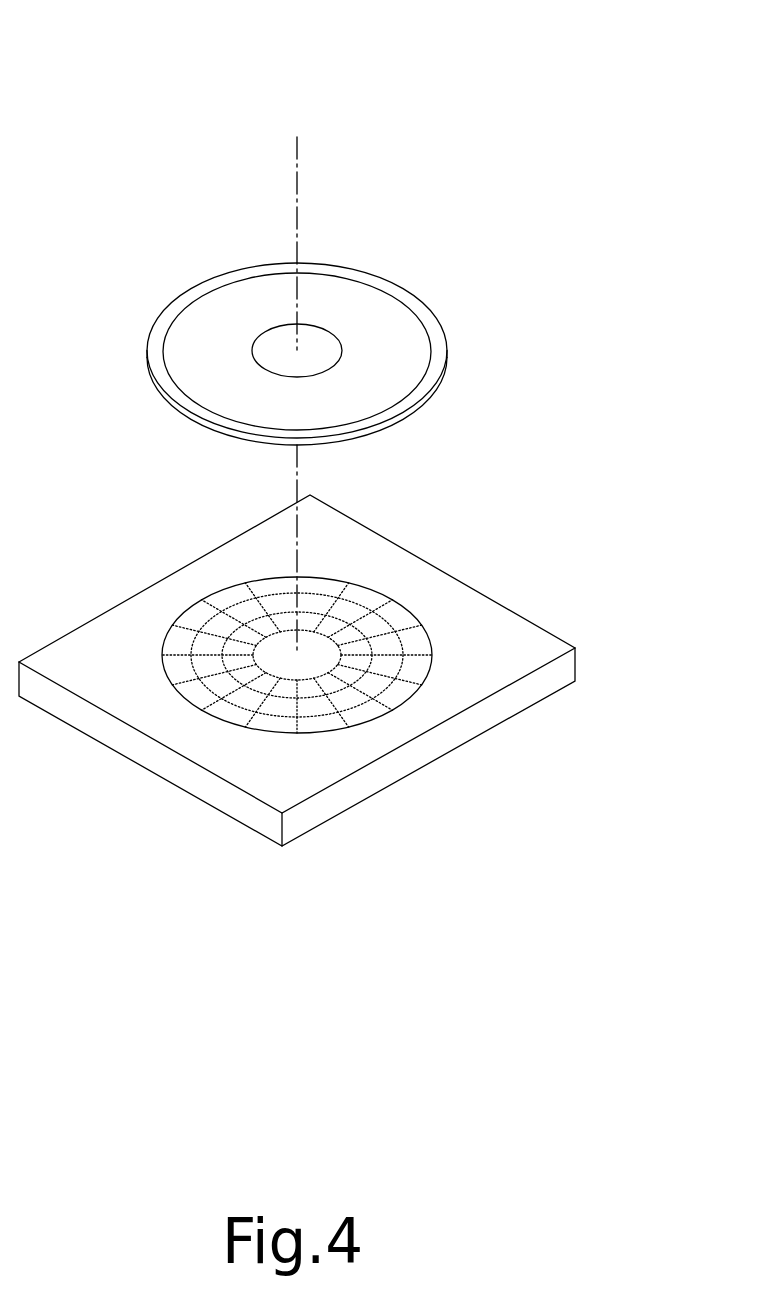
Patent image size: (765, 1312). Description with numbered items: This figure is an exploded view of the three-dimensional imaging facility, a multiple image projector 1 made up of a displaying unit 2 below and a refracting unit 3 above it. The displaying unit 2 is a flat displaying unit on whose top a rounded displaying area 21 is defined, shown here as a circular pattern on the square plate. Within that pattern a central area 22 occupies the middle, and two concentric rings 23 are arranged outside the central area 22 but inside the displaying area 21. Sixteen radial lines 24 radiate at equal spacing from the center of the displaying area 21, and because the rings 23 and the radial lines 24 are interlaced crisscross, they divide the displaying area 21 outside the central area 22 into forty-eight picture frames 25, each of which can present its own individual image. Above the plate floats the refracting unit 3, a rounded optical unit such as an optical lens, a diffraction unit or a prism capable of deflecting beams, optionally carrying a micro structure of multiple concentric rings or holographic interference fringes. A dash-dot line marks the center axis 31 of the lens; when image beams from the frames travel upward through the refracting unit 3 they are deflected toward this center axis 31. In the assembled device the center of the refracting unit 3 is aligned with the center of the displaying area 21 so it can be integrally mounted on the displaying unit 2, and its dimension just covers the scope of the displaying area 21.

The multiple image projector 1 is at (160, 128).
The displaying unit 2 is at (480, 633).
The displaying area 21 is at (155, 680).
The central area 22 is at (278, 648).
The concentric rings 23 is at (402, 667).
The radial lines 24 is at (383, 702).
The picture frames 25 is at (347, 700).
The refracting unit 3 is at (382, 313).
The center axis 31 is at (297, 243).